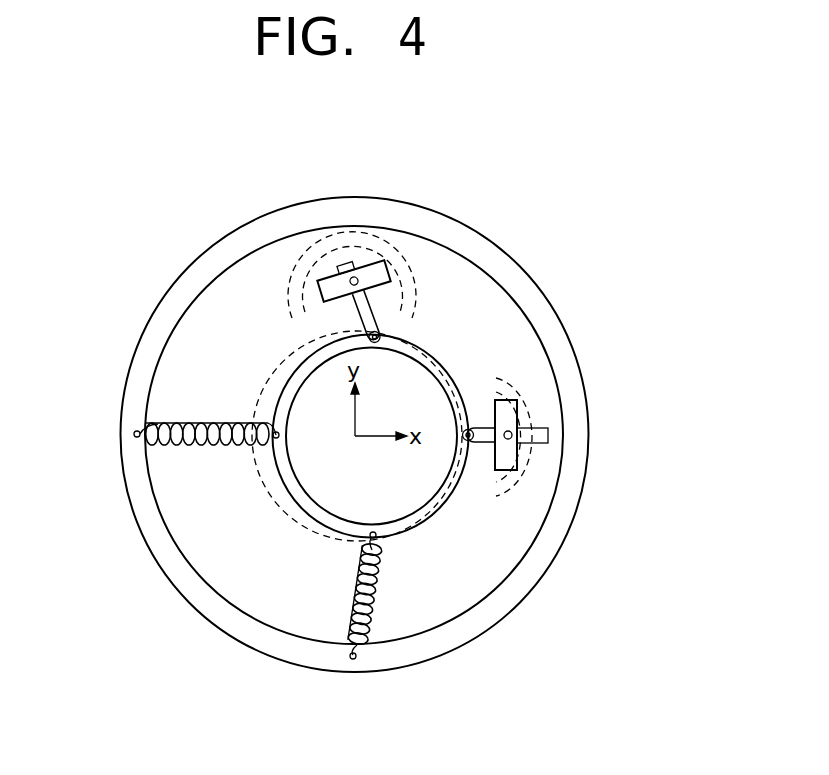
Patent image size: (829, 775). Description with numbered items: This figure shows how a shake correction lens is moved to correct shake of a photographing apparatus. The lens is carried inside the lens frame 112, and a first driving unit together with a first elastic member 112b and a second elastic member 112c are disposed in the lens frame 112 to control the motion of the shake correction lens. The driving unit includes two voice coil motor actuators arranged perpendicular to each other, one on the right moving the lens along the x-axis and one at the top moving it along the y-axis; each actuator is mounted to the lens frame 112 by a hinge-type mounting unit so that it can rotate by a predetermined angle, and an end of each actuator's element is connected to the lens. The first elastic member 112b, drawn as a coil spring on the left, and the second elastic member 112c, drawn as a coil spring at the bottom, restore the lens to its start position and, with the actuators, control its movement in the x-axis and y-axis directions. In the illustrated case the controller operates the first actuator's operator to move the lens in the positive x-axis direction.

The lens frame 112 is at (512, 268).
The first elastic member 112b is at (180, 443).
The second elastic member 112c is at (370, 628).